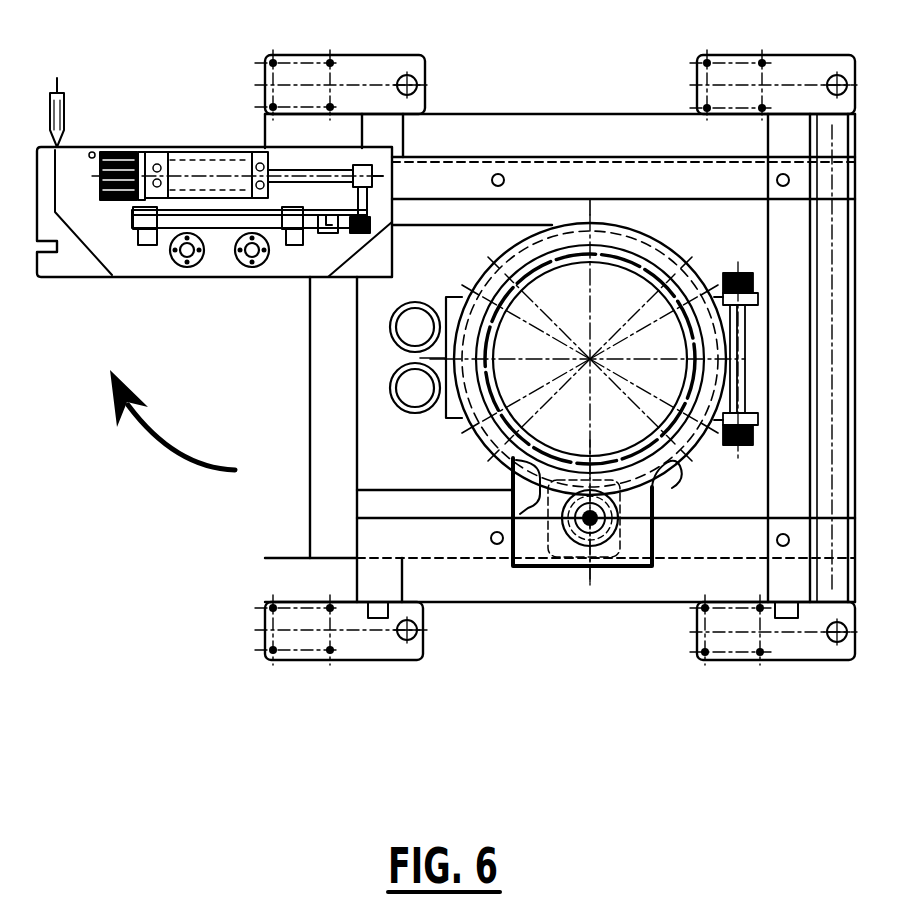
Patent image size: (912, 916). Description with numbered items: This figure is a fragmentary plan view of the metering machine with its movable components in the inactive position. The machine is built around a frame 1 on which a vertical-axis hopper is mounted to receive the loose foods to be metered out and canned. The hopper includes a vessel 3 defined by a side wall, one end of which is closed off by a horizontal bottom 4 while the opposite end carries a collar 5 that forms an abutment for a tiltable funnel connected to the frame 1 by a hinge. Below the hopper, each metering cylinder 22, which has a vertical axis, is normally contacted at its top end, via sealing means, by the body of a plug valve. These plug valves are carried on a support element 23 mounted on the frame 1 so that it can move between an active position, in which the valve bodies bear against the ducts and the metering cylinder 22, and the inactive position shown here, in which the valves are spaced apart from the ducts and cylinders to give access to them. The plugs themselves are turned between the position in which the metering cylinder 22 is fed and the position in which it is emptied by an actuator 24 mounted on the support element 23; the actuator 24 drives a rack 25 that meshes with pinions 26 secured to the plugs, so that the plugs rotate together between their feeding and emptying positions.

The frame 1 is at (618, 130).
The vessel 3 is at (568, 250).
The horizontal bottom 4 is at (647, 298).
The collar 5 is at (672, 465).
The metering cylinder 22 is at (282, 423).
The support element 23 is at (73, 157).
The actuator 24 is at (185, 168).
The rack 25 is at (220, 229).
The pinions 26 is at (258, 268).